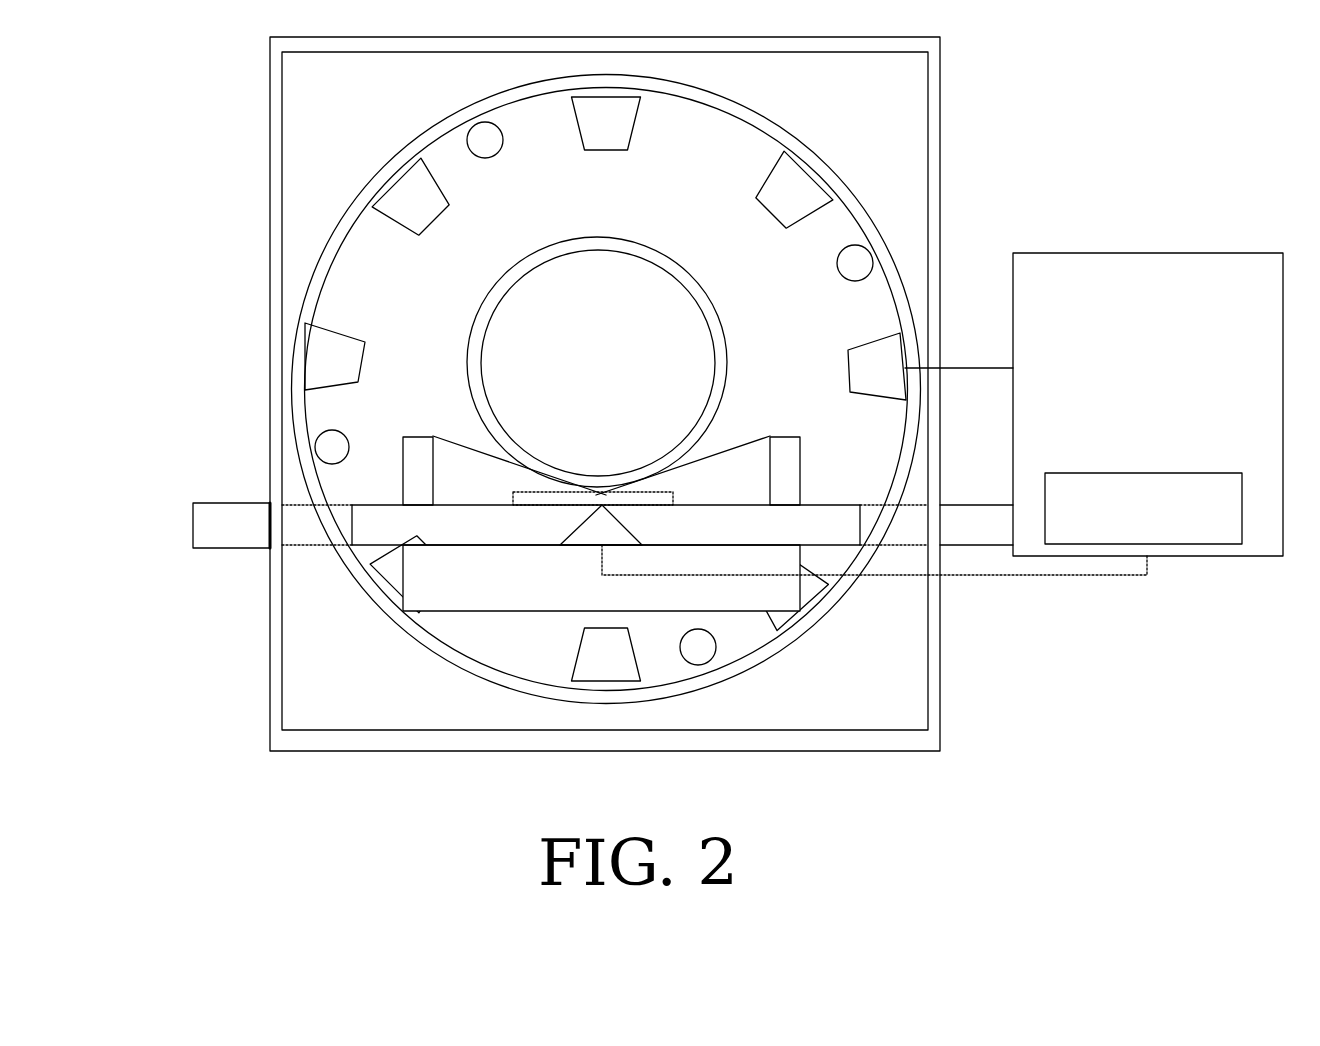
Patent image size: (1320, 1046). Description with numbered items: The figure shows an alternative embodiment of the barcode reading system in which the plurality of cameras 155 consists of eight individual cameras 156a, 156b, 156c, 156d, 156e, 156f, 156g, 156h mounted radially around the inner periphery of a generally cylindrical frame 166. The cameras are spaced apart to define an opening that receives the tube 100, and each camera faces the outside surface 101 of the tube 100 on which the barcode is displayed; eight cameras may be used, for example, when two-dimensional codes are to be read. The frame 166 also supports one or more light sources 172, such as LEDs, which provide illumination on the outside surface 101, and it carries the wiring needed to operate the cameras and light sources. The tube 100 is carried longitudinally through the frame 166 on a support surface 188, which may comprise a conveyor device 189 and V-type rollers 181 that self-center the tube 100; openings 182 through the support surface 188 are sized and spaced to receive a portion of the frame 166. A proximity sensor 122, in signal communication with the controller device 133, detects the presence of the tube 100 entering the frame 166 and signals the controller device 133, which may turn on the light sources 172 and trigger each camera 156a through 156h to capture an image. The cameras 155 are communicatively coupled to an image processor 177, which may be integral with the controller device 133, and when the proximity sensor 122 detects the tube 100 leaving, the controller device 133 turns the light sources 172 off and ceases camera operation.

The plurality of cameras 155 is at (328, 196).
The frame 166 is at (777, 138).
The tube 100 is at (477, 327).
The outside surface 101 is at (548, 232).
The camera 156a is at (612, 127).
The camera 156b is at (787, 195).
The camera 156c is at (870, 372).
The camera 156d is at (807, 583).
The camera 156e is at (590, 660).
The camera 156f is at (388, 572).
The camera 156g is at (312, 345).
The camera 156h is at (407, 193).
The light source 172 is at (487, 147).
The proximity sensor 122 is at (593, 535).
The V-type rollers 181 is at (601, 470).
The support surface 188 is at (606, 525).
The openings 182 is at (303, 523).
The conveyor device 189 is at (832, 472).
The controller device 133 is at (1094, 404).
The image processor 177 is at (1143, 508).